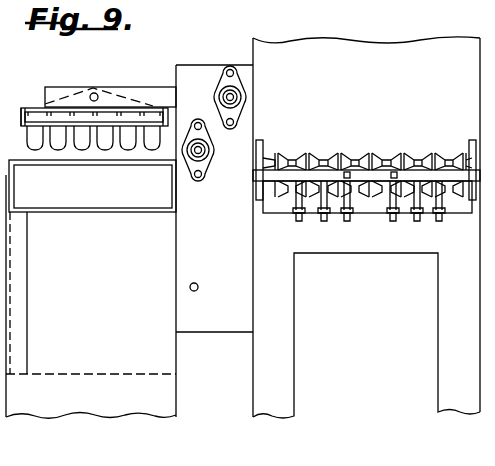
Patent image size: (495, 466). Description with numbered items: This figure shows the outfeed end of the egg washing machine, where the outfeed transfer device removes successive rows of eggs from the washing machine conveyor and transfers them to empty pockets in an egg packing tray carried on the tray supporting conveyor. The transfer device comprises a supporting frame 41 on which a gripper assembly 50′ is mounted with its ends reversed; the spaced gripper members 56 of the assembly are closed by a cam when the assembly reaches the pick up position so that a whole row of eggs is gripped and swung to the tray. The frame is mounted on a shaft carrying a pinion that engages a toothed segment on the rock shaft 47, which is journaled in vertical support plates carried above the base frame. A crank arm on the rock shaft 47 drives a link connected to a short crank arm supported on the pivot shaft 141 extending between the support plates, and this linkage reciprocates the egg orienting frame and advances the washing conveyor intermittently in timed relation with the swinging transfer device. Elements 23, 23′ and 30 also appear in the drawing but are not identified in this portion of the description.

The roller guide 23 is at (268, 158).
The roller guide 23′ is at (470, 155).
The frame 30 is at (143, 213).
The supporting frame 41 is at (129, 87).
The rock shaft 47 is at (203, 153).
The gripper assembly 50′ is at (37, 81).
The gripper member 56 is at (125, 150).
The pivot shaft 141 is at (198, 284).